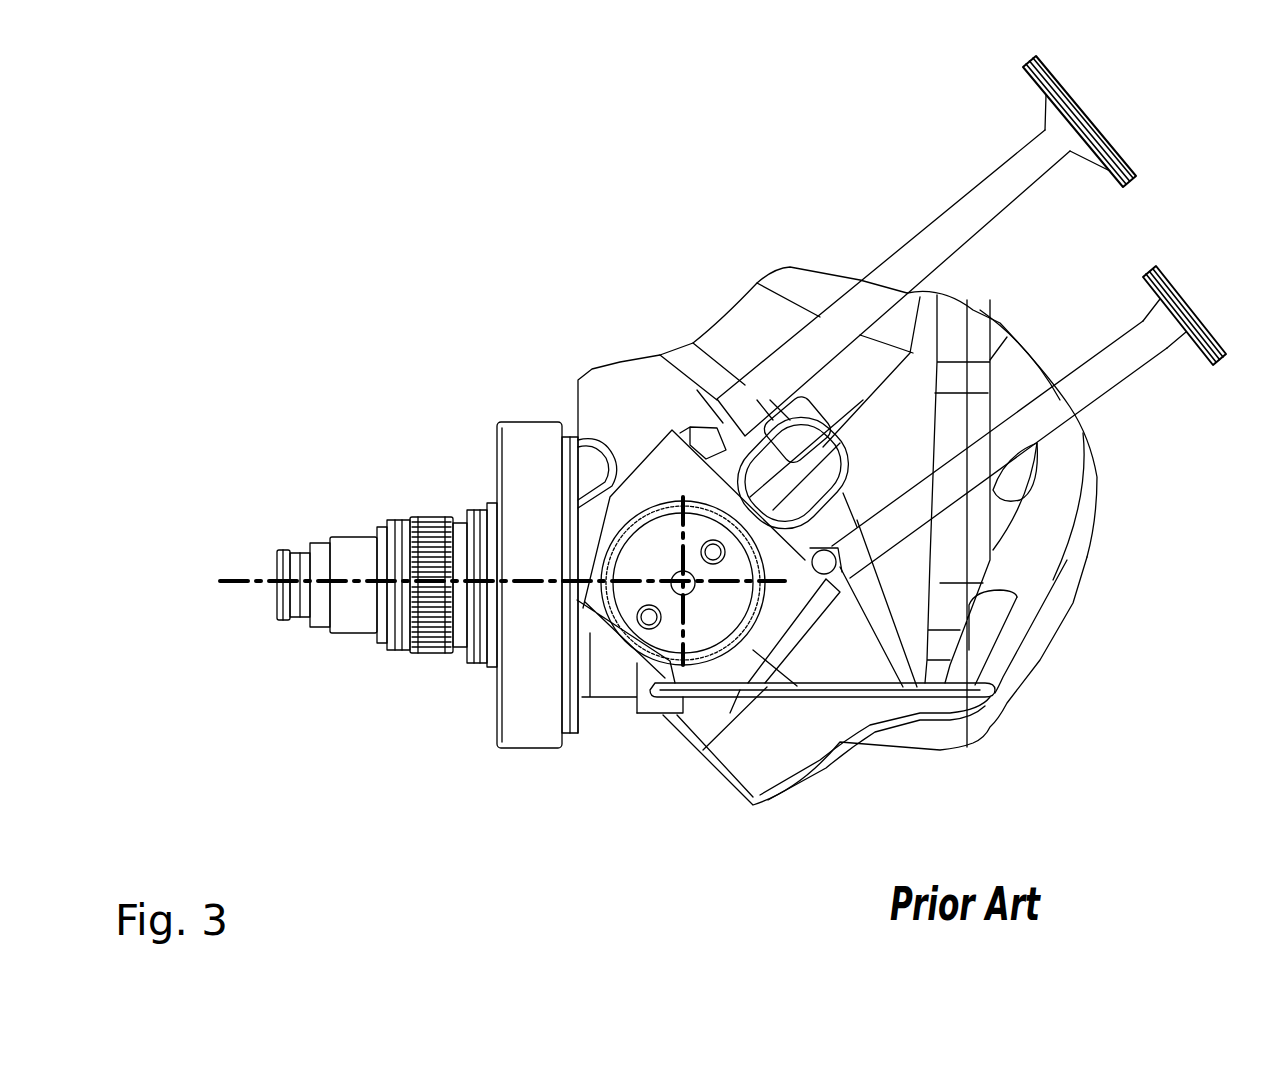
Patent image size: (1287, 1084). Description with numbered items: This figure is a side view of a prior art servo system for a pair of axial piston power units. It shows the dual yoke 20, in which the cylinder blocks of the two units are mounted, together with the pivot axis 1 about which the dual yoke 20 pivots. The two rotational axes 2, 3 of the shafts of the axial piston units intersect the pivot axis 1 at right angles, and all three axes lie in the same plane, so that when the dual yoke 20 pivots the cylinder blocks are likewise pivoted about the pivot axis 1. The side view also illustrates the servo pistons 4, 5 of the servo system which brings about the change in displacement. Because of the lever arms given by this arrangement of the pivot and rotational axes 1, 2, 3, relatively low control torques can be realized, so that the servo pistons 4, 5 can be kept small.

The pivot axis 1 is at (690, 590).
The rotational axis 2 is at (350, 582).
The rotational axis 3 is at (427, 628).
The servo piston 4 is at (990, 205).
The servo piston 5 is at (1095, 378).
The dual yoke 20 is at (1033, 557).